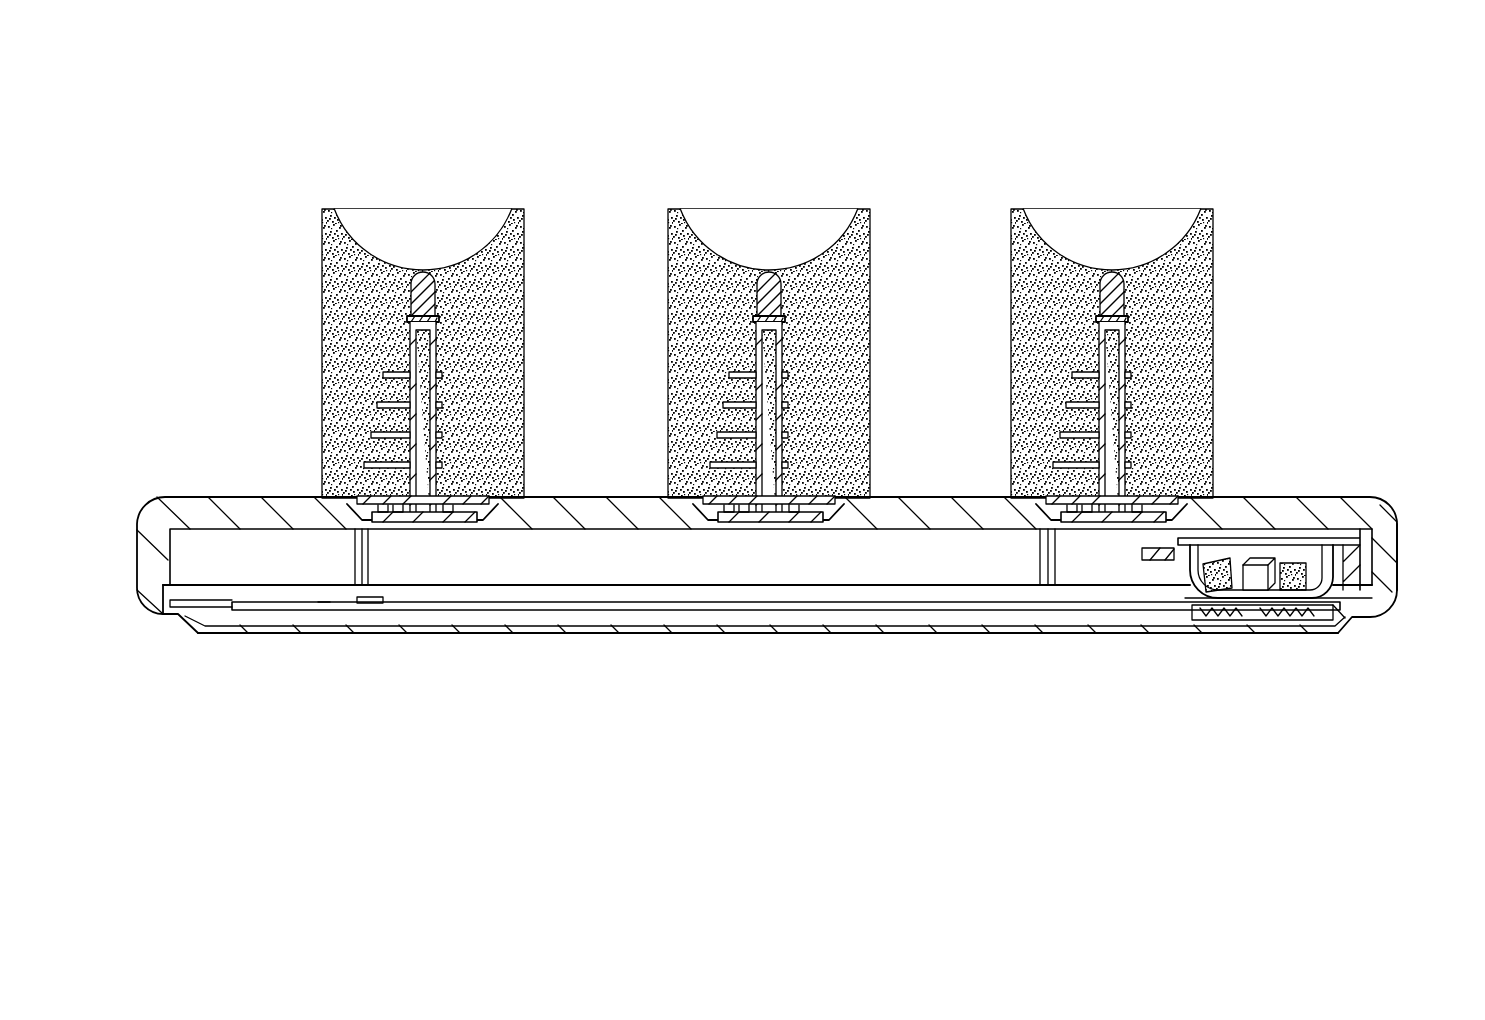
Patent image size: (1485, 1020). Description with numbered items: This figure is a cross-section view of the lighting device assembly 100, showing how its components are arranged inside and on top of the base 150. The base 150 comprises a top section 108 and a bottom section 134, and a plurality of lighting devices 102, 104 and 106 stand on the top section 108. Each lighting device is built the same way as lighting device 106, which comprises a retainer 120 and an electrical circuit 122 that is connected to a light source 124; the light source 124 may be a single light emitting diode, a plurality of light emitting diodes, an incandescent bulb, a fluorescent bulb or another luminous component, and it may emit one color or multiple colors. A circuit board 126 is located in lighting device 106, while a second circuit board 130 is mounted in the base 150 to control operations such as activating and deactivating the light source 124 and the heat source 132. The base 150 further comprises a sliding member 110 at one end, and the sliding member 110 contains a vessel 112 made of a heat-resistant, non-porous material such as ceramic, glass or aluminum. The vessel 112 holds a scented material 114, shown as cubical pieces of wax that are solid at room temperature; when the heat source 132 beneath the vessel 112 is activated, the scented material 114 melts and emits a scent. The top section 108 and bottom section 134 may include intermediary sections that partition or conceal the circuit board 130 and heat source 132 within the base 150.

The lighting device assembly 100 is at (486, 117).
The lighting device 102 is at (320, 295).
The lighting device 104 is at (665, 295).
The lighting device 106 is at (1213, 295).
The top section 108 is at (158, 500).
The sliding member 110 is at (1398, 560).
The vessel 112 is at (1322, 560).
The scented material 114 is at (1258, 560).
The retainer 120 is at (1150, 372).
The electrical circuit 122 is at (1106, 358).
The light source 124 is at (1117, 270).
The circuit board 126 is at (1128, 522).
The circuit board 130 is at (272, 601).
The heat source 132 is at (1262, 622).
The bottom section 134 is at (308, 634).
The base 150 is at (176, 474).